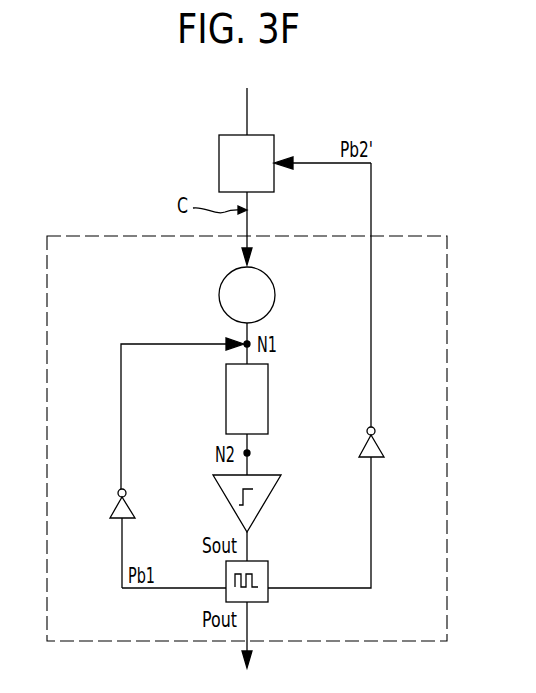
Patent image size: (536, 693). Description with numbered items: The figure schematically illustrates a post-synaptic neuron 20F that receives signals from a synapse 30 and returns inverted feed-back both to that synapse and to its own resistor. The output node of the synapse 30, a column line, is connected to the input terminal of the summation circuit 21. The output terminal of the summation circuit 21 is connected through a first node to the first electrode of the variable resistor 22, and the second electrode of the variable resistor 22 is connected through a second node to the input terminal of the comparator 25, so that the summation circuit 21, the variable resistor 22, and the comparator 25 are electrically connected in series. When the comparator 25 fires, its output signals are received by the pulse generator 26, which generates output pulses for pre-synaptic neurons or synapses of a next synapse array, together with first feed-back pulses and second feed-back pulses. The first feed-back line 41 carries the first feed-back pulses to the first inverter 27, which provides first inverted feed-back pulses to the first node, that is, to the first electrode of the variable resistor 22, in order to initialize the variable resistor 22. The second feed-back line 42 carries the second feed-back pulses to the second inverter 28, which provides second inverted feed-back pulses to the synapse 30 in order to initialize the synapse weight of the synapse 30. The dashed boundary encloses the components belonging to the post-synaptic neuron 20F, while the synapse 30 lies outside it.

The post-synaptic neuron 20F is at (92, 268).
The summation circuit 21 is at (272, 308).
The variable resistor 22 is at (268, 395).
The comparator 25 is at (268, 497).
The pulse generator 26 is at (268, 570).
The first inverter 27 is at (113, 506).
The second inverter 28 is at (380, 441).
The synapse 30 is at (274, 140).
The first feed-back line 41 is at (117, 404).
The second feed-back line 42 is at (377, 366).